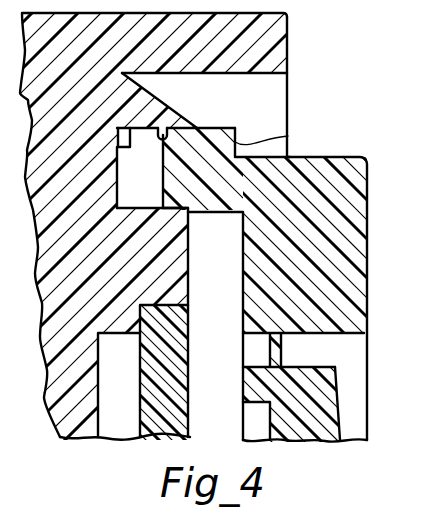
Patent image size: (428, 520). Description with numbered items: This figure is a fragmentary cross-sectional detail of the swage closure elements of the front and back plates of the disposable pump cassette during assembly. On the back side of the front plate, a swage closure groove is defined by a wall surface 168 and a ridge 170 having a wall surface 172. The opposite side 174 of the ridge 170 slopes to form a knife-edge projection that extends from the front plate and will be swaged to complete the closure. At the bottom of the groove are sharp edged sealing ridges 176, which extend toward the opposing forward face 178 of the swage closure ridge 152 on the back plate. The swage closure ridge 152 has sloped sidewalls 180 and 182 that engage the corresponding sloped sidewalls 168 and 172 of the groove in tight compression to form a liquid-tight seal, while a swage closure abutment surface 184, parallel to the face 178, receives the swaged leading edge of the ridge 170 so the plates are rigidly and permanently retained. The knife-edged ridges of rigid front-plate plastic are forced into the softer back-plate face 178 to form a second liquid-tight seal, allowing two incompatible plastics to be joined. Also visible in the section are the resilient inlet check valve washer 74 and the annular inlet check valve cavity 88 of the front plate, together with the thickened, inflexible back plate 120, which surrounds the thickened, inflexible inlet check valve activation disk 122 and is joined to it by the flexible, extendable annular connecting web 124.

The ridge 170 is at (152, 107).
The opposite side of the ridge 174 is at (166, 84).
The wall surface 172 is at (116, 138).
The forward face 178 is at (176, 128).
The sharp edged sealing ridges 176 is at (118, 147).
The swage closure ridge 152 is at (220, 193).
The sloped sidewall 180 is at (232, 128).
The swage closure abutment surface 184 is at (288, 137).
The wall surface 168 is at (144, 198).
The sloped sidewall 182 is at (214, 214).
The resilient inlet check valve washer 74 is at (188, 370).
The annular inlet check valve cavity 88 is at (132, 387).
The back plate 120 is at (365, 302).
The annular connecting web 124 is at (276, 350).
The inlet check valve activation disk 122 is at (338, 397).